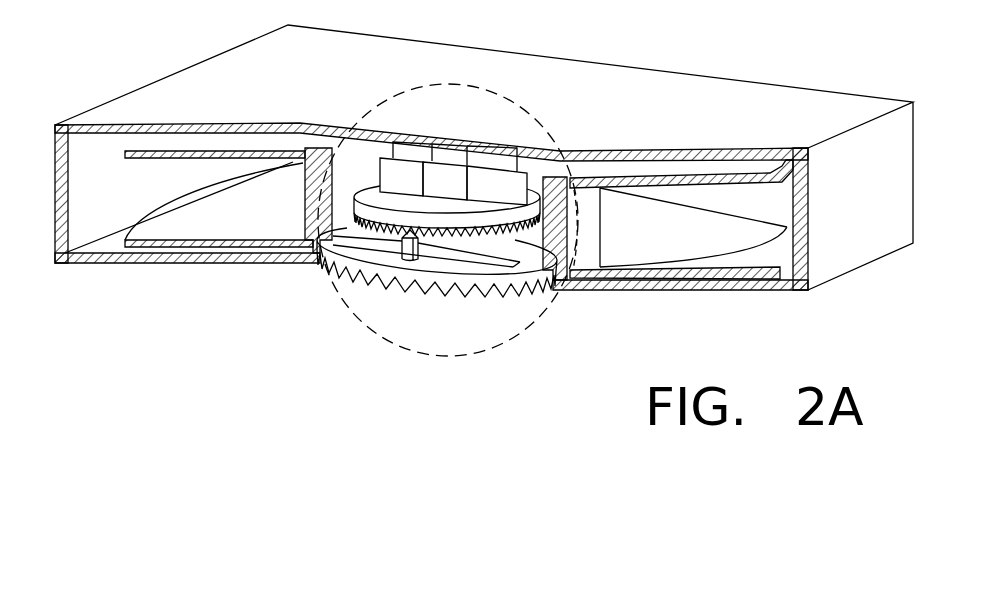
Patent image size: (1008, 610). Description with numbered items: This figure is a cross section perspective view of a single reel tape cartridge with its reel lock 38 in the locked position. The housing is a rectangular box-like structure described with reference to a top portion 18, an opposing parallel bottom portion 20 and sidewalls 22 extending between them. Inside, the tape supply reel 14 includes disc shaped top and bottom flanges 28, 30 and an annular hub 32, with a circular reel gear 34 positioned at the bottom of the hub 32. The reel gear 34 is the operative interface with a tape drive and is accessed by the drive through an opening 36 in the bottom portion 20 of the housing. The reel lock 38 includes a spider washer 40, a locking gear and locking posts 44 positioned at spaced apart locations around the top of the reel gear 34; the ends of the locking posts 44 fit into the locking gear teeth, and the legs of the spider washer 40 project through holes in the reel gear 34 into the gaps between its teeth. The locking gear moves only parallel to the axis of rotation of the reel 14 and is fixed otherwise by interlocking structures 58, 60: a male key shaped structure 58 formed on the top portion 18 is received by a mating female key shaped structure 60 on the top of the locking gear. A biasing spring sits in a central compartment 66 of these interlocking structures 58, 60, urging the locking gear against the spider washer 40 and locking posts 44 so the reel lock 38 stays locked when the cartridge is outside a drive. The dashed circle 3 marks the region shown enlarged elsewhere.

The detail region 3 is at (470, 84).
The tape supply reel 14 is at (200, 223).
The top portion 18 is at (722, 98).
The bottom portion 20 is at (720, 293).
The sidewalls 22 is at (857, 250).
The top flange 28 is at (188, 158).
The bottom flange 30 is at (143, 231).
The annular hub 32 is at (593, 228).
The reel gear 34 is at (507, 283).
The opening 36 is at (332, 308).
The reel lock 38 is at (355, 162).
The spider washer 40 is at (447, 258).
The locking posts 44 is at (388, 262).
The male key shaped structure 58 is at (517, 163).
The female key shaped structure 60 is at (397, 140).
The central compartment 66 is at (443, 150).